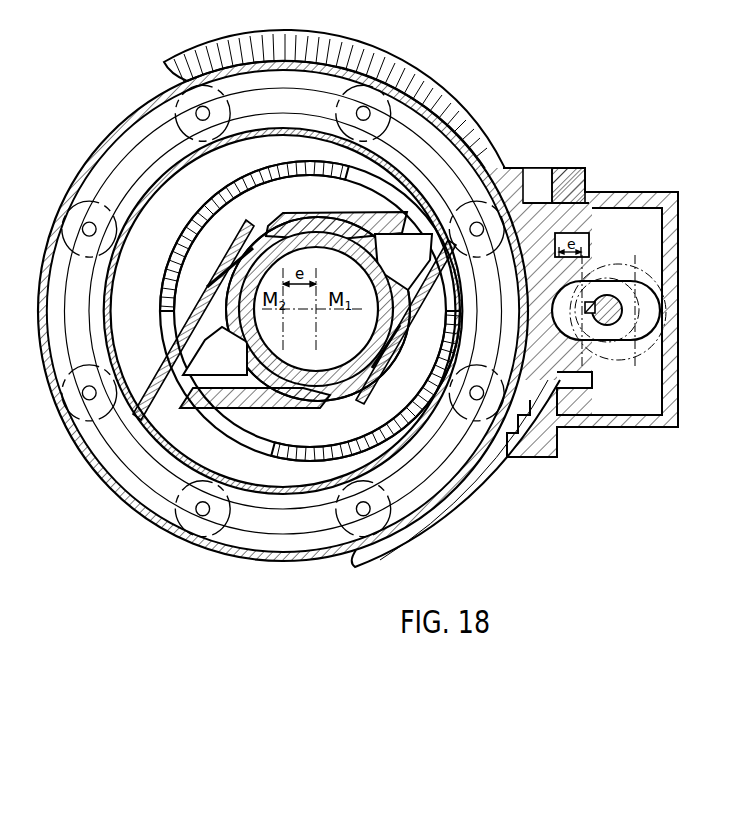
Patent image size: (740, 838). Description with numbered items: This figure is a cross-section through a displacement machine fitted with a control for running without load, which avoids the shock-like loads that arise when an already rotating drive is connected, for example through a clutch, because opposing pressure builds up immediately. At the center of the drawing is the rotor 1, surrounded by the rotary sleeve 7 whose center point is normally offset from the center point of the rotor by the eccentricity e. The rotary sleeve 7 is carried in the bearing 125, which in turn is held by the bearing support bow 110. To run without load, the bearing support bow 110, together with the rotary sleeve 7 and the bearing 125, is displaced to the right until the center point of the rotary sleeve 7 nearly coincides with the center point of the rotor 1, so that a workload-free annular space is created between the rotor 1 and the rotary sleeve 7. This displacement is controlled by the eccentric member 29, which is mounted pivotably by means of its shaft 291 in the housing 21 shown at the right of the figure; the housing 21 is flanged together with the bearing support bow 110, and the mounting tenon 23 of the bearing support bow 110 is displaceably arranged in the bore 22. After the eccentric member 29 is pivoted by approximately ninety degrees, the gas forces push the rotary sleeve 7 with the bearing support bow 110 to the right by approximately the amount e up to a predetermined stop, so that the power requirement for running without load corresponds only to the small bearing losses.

The rotor 1 is at (190, 231).
The rotary sleeve 7 is at (283, 311).
The housing 21 is at (577, 172).
The bore 22 is at (636, 211).
The mounting tenon 23 is at (536, 203).
The eccentric member 29 is at (663, 364).
The bearing support bow 110 is at (398, 60).
The bearing 125 is at (283, 347).
The shaft 291 is at (661, 267).